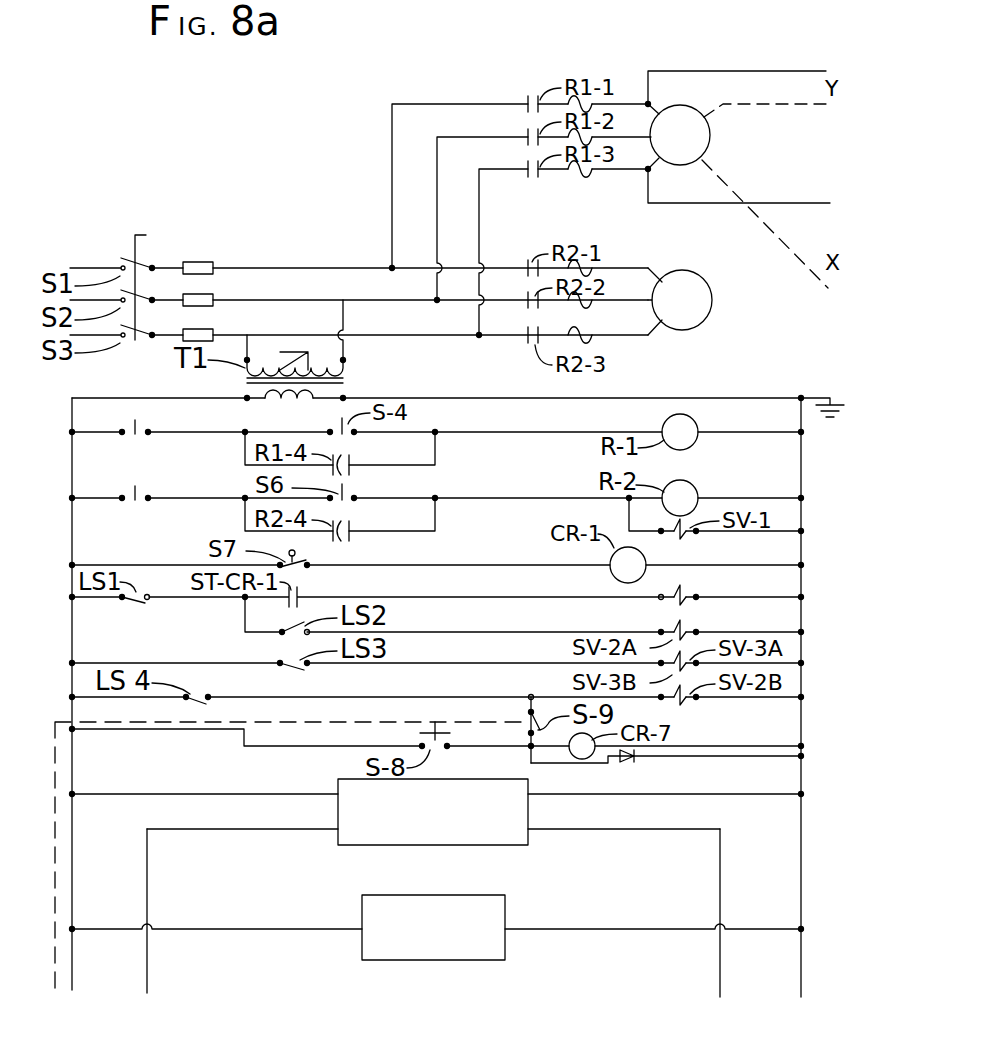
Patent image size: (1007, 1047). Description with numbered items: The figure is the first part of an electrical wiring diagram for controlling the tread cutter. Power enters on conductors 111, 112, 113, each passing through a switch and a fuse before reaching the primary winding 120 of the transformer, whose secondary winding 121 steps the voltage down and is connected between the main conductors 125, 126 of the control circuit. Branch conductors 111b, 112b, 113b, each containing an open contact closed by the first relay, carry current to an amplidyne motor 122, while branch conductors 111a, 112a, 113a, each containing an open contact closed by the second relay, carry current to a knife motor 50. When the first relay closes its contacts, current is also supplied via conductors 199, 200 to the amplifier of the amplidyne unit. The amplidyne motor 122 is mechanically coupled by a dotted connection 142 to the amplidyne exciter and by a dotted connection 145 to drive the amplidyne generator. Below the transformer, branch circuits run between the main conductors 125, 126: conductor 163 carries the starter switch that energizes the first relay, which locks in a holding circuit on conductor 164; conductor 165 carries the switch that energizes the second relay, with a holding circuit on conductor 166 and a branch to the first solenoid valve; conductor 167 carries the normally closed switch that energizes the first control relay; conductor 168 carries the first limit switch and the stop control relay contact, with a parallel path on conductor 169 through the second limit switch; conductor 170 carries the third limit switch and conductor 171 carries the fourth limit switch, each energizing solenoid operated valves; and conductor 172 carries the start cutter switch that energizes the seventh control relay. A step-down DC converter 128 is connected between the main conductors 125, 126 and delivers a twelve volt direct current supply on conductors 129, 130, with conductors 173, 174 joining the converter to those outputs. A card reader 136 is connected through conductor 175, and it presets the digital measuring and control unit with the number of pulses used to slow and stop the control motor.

The conductor 111 is at (242, 268).
The conductor 112 is at (242, 300).
The conductor 113 is at (242, 335).
The branch conductor 111a is at (497, 268).
The branch conductor 112a is at (512, 300).
The branch conductor 113a is at (500, 335).
The branch conductor 111b is at (452, 104).
The branch conductor 112b is at (480, 137).
The branch conductor 113b is at (518, 169).
The amplidyne motor 122 is at (700, 151).
The knife motor 50 is at (700, 316).
The conductor 199 is at (756, 71).
The conductor 200 is at (684, 203).
The connection 145 is at (742, 107).
The connection 142 is at (762, 228).
The primary winding 120 is at (345, 372).
The secondary winding 121 is at (247, 394).
The main conductor 125 is at (72, 482).
The main conductor 126 is at (801, 482).
The conductor 163 is at (553, 434).
The conductor 164 is at (435, 468).
The conductor 165 is at (553, 500).
The conductor 166 is at (435, 534).
The conductor 167 is at (538, 567).
The conductor 168 is at (455, 598).
The conductor 169 is at (538, 634).
The conductor 170 is at (448, 664).
The conductor 171 is at (310, 697).
The conductor 172 is at (244, 748).
The conductor 173 is at (274, 830).
The conductor 174 is at (592, 830).
The conductor 175 is at (653, 932).
The step-down DC converter 128 is at (460, 847).
The conductor 129 is at (147, 972).
The conductor 130 is at (720, 974).
The card reader 136 is at (460, 962).